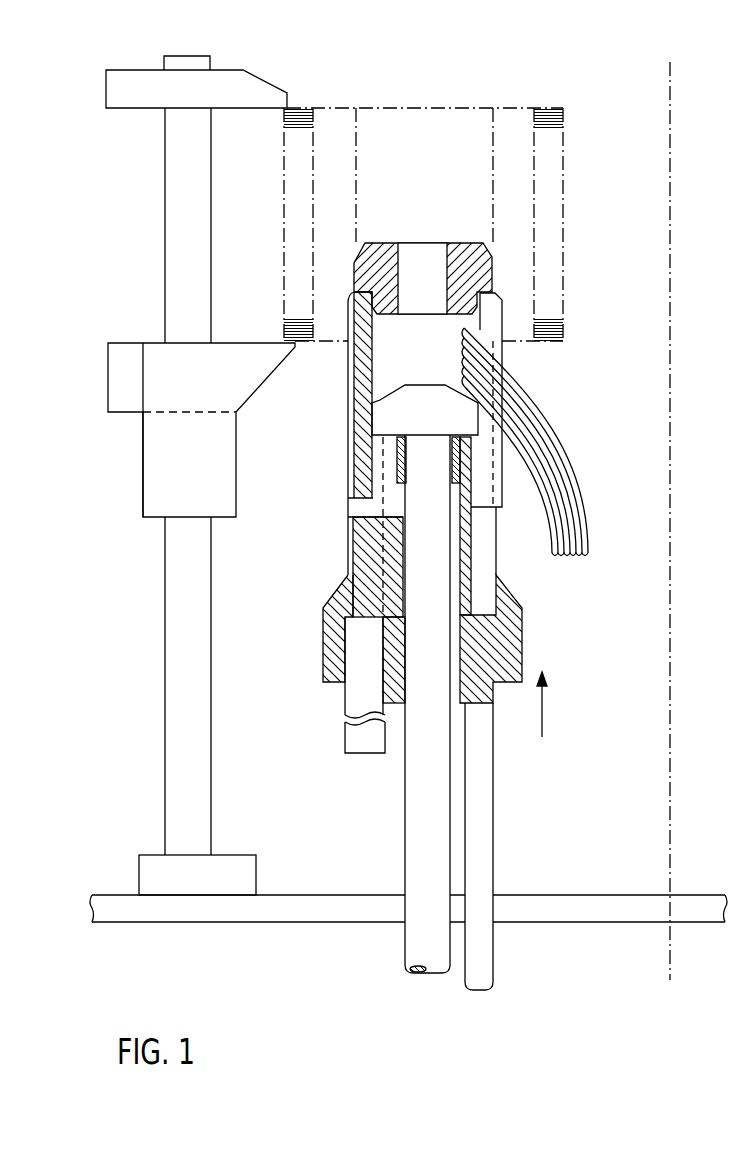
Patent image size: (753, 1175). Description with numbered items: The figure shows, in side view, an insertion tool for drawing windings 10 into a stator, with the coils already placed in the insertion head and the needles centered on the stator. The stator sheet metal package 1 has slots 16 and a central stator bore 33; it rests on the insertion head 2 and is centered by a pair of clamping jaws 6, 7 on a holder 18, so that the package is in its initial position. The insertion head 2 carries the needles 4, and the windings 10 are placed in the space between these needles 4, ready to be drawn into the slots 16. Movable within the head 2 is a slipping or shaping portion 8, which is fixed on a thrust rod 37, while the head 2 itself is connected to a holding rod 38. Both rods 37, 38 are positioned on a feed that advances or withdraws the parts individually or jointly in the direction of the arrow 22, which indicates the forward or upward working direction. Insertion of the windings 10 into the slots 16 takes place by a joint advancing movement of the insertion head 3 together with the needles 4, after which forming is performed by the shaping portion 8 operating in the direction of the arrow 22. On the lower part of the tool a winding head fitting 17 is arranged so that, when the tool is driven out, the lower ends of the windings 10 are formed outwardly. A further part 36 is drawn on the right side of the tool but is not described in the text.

The stator sheet metal package 1 is at (548, 135).
The insertion head 2 is at (350, 499).
The insertion head 3 is at (386, 252).
The needles 4 is at (362, 360).
The clamping jaw 6 is at (250, 388).
The clamping jaw 7 is at (235, 78).
The shaping portion 8 is at (387, 422).
The windings 10 is at (563, 512).
The slots 16 is at (515, 115).
The winding head fitting 17 is at (522, 635).
The holder 18 is at (160, 220).
The arrow 22 is at (544, 702).
The stator bore 33 is at (448, 125).
The casing 36 is at (497, 465).
The thrust rod 37 is at (436, 835).
The holding rod 38 is at (487, 868).